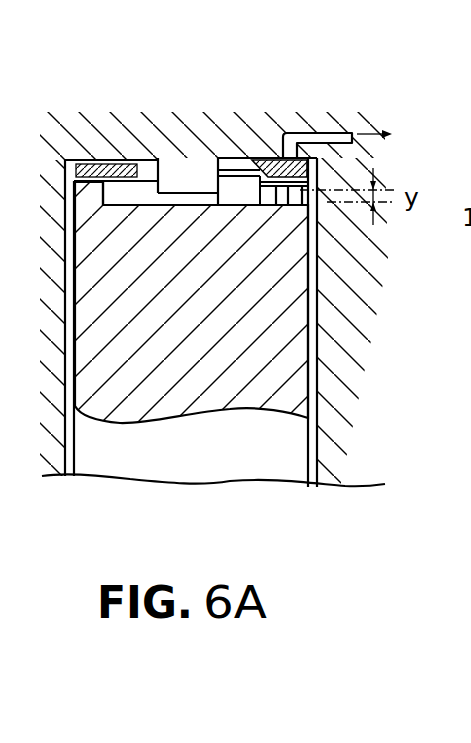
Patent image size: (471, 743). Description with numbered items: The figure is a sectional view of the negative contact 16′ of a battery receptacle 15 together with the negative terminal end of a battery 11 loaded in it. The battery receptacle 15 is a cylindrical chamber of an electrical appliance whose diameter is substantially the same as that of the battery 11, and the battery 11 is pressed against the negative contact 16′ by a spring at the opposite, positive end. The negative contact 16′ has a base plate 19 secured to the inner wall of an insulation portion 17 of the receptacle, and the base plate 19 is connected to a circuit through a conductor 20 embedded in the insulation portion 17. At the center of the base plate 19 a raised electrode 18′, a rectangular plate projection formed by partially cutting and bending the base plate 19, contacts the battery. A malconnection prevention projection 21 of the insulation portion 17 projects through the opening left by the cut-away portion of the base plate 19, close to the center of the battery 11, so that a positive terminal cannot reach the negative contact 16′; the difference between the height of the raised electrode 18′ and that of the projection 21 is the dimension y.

The insulation portion 17 is at (198, 126).
The base plate 19 is at (98, 158).
The malconnection prevention projection 21 is at (177, 183).
The raised electrode 18′ is at (252, 161).
The negative contact 16′ is at (277, 160).
The conductor 20 is at (337, 128).
The battery 11 is at (280, 285).
The battery receptacle 15 is at (278, 452).